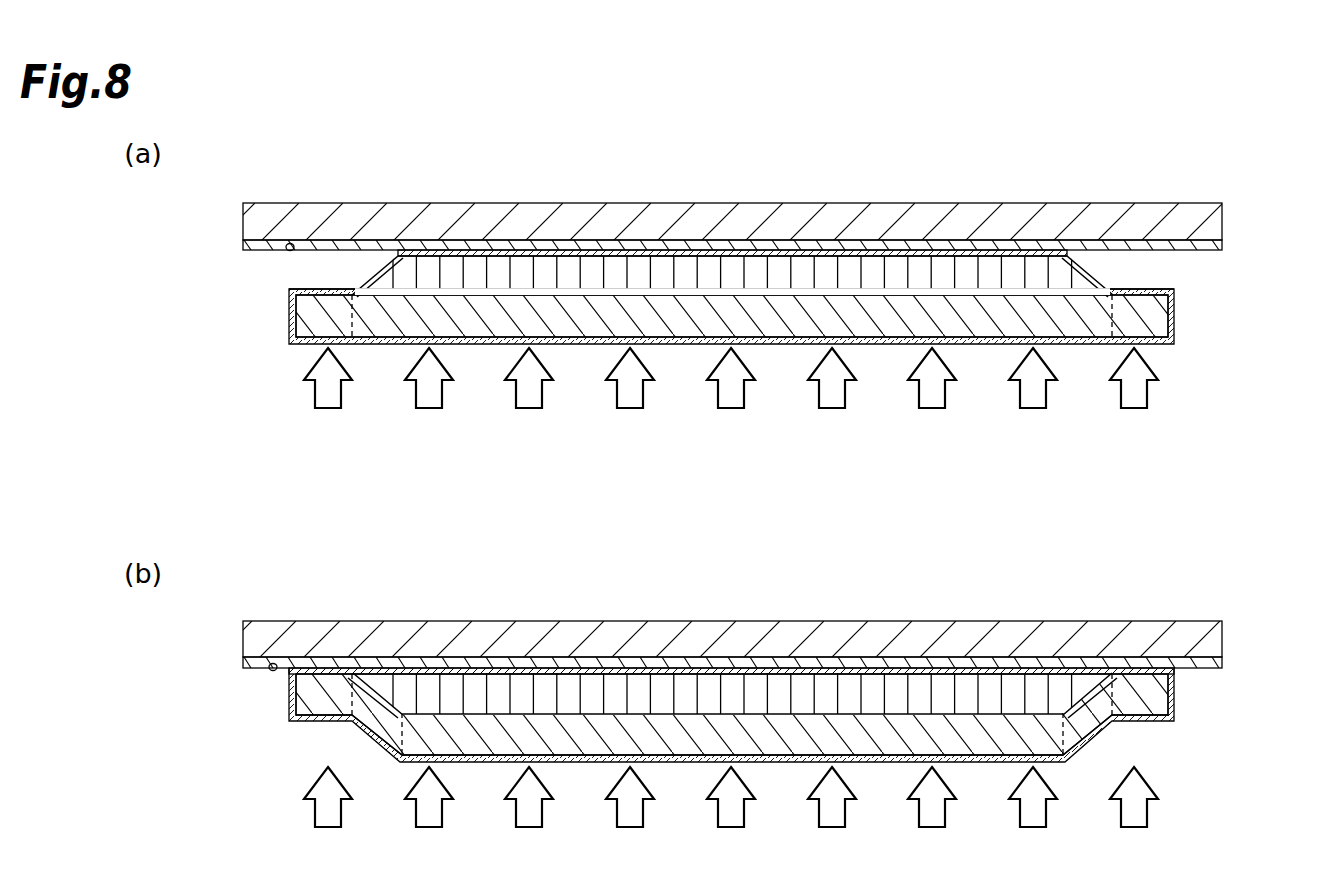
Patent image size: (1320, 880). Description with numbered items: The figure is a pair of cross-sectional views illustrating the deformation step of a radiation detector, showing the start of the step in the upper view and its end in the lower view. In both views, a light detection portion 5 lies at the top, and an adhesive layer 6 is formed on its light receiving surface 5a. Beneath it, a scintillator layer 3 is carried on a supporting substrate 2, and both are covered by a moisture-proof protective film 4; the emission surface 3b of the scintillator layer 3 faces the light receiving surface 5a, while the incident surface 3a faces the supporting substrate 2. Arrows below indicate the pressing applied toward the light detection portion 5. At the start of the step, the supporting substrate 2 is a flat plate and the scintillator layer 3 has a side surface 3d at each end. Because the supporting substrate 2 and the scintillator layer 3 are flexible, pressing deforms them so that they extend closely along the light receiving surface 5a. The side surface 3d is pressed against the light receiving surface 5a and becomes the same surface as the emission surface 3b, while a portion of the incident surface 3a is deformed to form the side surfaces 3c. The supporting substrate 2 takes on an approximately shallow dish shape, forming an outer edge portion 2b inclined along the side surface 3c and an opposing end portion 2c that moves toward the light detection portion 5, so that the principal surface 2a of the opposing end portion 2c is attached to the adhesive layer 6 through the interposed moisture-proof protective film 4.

The supporting substrate 2 is at (782, 312).
The principal surface 2a is at (980, 293).
The outer edge portion 2b is at (380, 722).
The opposing end portion 2c is at (313, 315).
The scintillator layer 3 is at (845, 272).
The incident surface 3a is at (672, 297).
The emission surface 3b is at (617, 253).
The side surface 3c is at (356, 688).
The side surface 3d is at (378, 271).
The moisture-proof protective film 4 is at (1172, 318).
The light detection portion 5 is at (905, 216).
The light receiving surface 5a is at (290, 244).
The adhesive layer 6 is at (1215, 244).